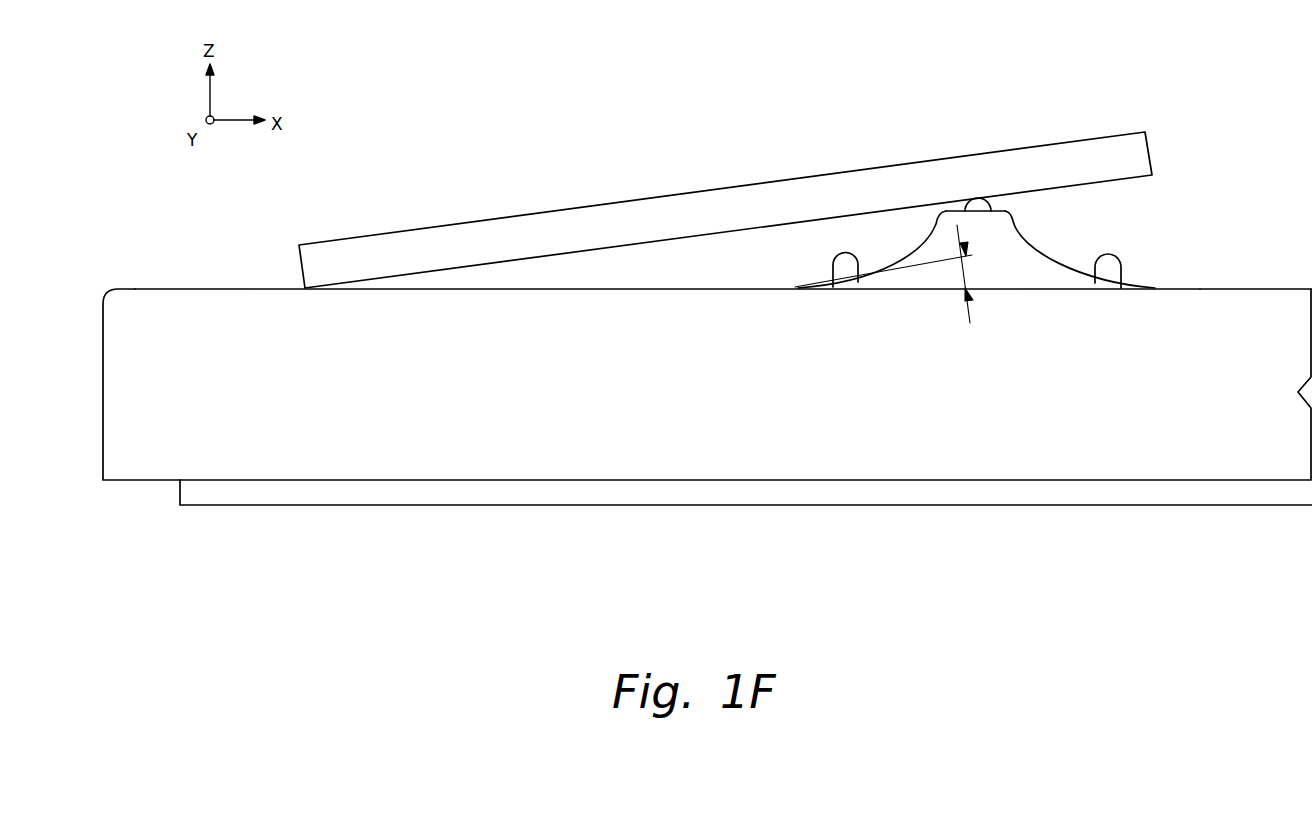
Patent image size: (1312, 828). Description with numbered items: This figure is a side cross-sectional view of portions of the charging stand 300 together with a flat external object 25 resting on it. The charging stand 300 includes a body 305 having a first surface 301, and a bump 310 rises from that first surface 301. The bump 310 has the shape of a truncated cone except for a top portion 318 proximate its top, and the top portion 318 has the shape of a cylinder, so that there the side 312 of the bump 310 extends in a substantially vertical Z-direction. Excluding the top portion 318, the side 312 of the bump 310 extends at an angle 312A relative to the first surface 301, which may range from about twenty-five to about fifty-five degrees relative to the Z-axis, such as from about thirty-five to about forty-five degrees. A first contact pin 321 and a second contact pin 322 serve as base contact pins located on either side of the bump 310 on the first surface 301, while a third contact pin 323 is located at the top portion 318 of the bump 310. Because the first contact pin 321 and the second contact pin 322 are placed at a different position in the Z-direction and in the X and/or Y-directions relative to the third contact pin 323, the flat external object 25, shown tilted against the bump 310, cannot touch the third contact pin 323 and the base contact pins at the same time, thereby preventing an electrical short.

The external object 25 is at (675, 195).
The charging stand 300 is at (122, 250).
The first surface 301 is at (1263, 287).
The body 305 is at (110, 352).
The bump 310 is at (1066, 281).
The side 312 is at (925, 243).
The angle 312A is at (975, 272).
The top portion 318 is at (1010, 209).
The first contact pin 321 is at (832, 265).
The second contact pin 322 is at (1123, 265).
The third contact pin 323 is at (980, 202).